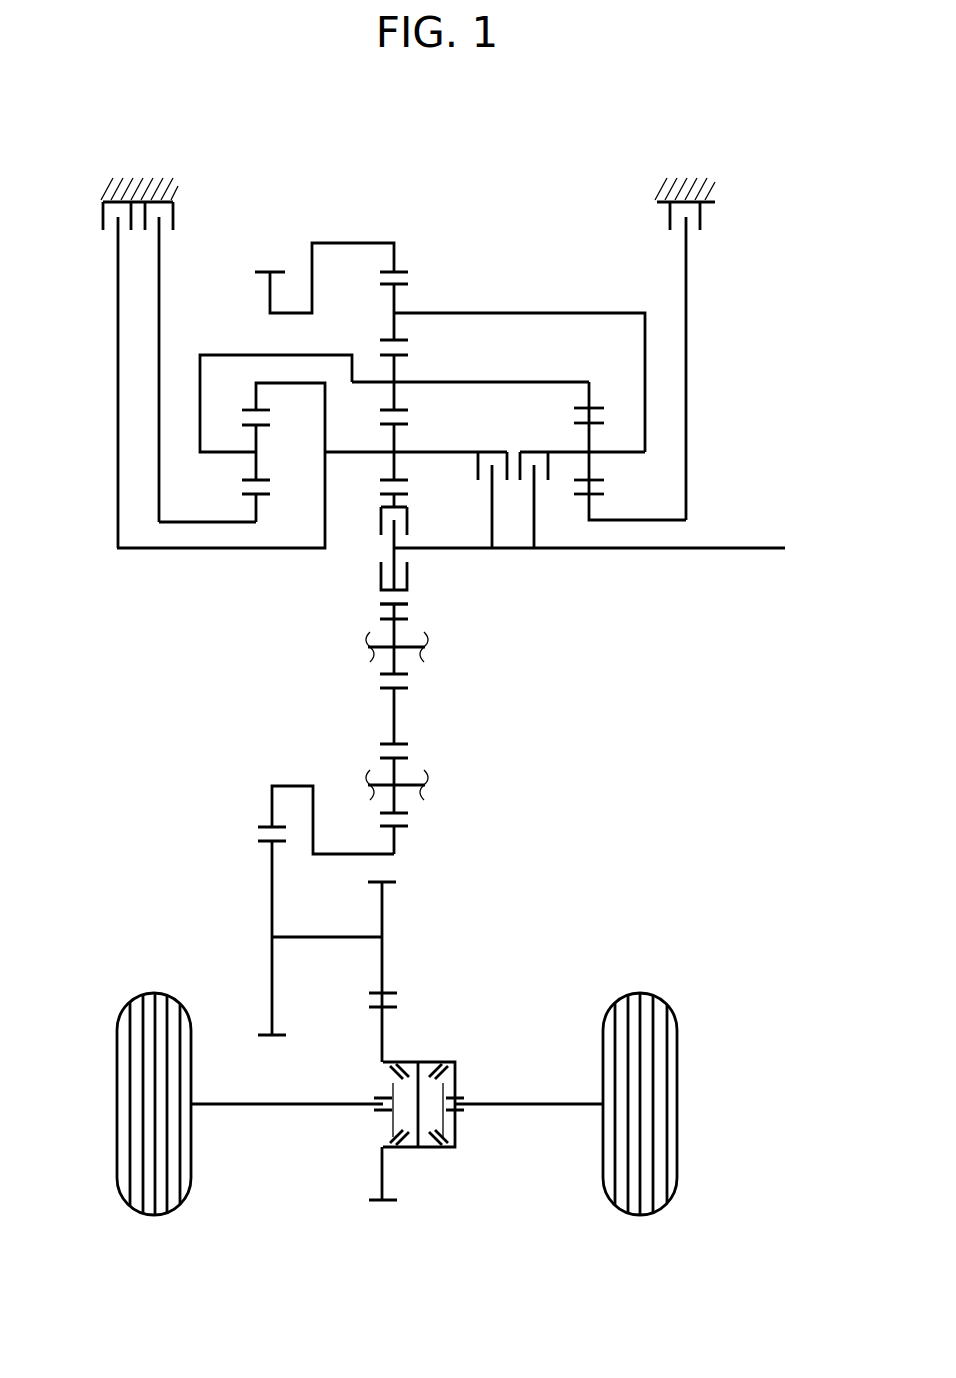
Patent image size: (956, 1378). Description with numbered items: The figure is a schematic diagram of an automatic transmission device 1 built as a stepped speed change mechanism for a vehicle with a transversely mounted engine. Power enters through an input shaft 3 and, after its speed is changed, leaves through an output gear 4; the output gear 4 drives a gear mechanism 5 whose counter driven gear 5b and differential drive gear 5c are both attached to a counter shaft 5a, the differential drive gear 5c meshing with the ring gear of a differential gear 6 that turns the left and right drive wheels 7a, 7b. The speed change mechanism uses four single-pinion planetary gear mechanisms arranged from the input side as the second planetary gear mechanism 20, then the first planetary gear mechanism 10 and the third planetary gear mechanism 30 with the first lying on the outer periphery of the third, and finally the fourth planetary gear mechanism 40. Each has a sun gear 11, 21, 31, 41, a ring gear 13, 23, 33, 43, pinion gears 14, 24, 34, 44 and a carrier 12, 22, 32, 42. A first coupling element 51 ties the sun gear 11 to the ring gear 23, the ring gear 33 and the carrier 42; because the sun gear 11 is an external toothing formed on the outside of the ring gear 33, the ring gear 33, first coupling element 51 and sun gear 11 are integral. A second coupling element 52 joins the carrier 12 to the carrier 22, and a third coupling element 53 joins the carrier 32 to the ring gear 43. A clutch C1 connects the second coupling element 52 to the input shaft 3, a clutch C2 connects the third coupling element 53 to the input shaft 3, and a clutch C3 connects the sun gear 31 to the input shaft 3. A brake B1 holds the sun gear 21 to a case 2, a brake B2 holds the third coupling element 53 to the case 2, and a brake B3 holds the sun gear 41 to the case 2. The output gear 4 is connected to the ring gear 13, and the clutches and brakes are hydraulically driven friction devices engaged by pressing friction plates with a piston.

The automatic transmission device 1 is at (531, 147).
The case 2 is at (140, 185).
The input shaft 3 is at (722, 546).
The output gear 4 is at (257, 270).
The gear mechanism 5 is at (223, 921).
The counter shaft 5a is at (345, 935).
The counter driven gear 5b is at (268, 845).
The differential drive gear 5c is at (395, 880).
The differential gear 6 is at (435, 1062).
The drive wheel 7a is at (155, 993).
The drive wheel 7b is at (640, 993).
The first planetary gear mechanism 10 is at (437, 297).
The sun gear 11 is at (405, 360).
The carrier 12 is at (408, 316).
The ring gear 13 is at (385, 270).
The pinion gears 14 is at (385, 285).
The second planetary gear mechanism 20 is at (612, 367).
The sun gear 21 is at (602, 496).
The carrier 22 is at (600, 448).
The ring gear 23 is at (592, 407).
The pinion gears 24 is at (602, 480).
The third planetary gear mechanism 30 is at (437, 439).
The sun gear 31 is at (410, 494).
The carrier 32 is at (381, 494).
The ring gear 33 is at (385, 408).
The pinion gears 34 is at (410, 478).
The fourth planetary gear mechanism 40 is at (213, 571).
The sun gear 41 is at (262, 495).
The carrier 42 is at (237, 453).
The ring gear 43 is at (262, 410).
The pinion gears 44 is at (259, 478).
The first coupling element 51 is at (485, 382).
The second coupling element 52 is at (545, 312).
The third coupling element 53 is at (270, 383).
The brake B1 is at (688, 195).
The brake B2 is at (120, 195).
The brake B3 is at (165, 195).
The clutch C1 is at (530, 450).
The clutch C2 is at (487, 450).
The clutch C3 is at (410, 516).